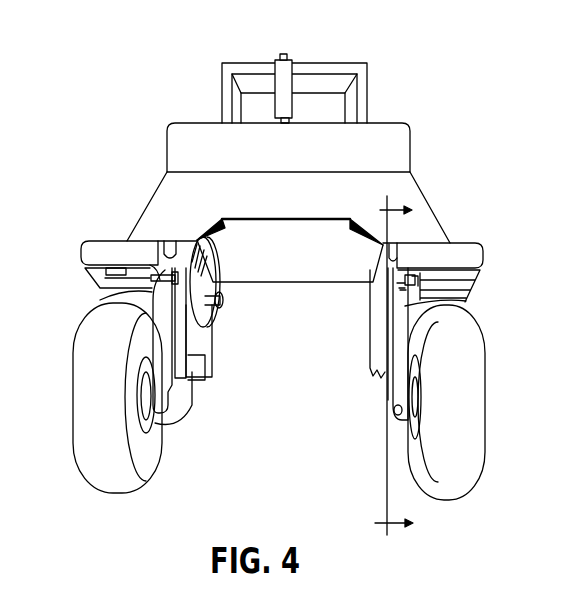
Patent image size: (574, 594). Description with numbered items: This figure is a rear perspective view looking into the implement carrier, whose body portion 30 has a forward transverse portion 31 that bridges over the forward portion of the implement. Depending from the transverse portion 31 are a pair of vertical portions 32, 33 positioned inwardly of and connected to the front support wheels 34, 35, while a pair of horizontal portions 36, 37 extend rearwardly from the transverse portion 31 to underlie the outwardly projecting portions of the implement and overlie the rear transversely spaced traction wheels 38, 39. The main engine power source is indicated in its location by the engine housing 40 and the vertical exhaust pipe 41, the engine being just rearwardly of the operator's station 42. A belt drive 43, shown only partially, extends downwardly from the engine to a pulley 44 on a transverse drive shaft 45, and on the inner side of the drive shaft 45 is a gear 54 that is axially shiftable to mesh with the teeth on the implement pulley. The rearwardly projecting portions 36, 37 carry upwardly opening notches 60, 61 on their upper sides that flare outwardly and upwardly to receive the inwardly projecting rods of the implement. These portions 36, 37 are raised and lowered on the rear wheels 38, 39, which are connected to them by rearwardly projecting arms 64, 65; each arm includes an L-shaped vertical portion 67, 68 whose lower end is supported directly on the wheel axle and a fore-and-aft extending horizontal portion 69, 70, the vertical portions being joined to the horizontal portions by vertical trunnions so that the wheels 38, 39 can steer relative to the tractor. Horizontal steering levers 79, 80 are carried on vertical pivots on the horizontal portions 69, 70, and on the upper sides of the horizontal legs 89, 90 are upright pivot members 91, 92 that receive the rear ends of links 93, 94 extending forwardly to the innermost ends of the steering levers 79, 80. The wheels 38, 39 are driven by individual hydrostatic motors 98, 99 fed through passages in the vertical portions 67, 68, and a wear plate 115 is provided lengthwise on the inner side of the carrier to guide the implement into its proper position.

The body portion 30 is at (371, 58).
The forward transverse portion 31 is at (410, 128).
The vertical portion 32 is at (208, 338).
The vertical portion 33 is at (378, 334).
The front support wheel 34 is at (192, 403).
The front support wheel 35 is at (392, 410).
The horizontal portion 36 is at (86, 246).
The horizontal portion 37 is at (460, 263).
The rear traction wheel 38 is at (88, 437).
The rear traction wheel 39 is at (470, 445).
The engine housing 40 is at (182, 133).
The vertical exhaust pipe 41 is at (286, 70).
The operator's station 42 is at (247, 63).
The belt drive 43 is at (208, 256).
The pulley 44 is at (203, 283).
The transverse drive shaft 45 is at (220, 302).
The gear 54 is at (221, 306).
The notch 60 is at (177, 240).
The notch 61 is at (394, 244).
The rearwardly projecting arm 64 is at (158, 292).
The rearwardly projecting arm 65 is at (414, 280).
The vertical portion 67 is at (160, 337).
The vertical portion 68 is at (404, 352).
The horizontal portion 69 is at (104, 278).
The horizontal portion 70 is at (460, 285).
The steering lever 79 is at (206, 360).
The steering lever 80 is at (400, 292).
The horizontal leg 89 is at (113, 292).
The horizontal leg 90 is at (466, 296).
The upright pivot member 91 is at (142, 270).
The upright pivot member 92 is at (405, 300).
The link 93 is at (176, 272).
The link 94 is at (397, 287).
The hydrostatic motor 98 is at (140, 383).
The hydrostatic motor 99 is at (417, 400).
The wear plate 115 is at (172, 240).